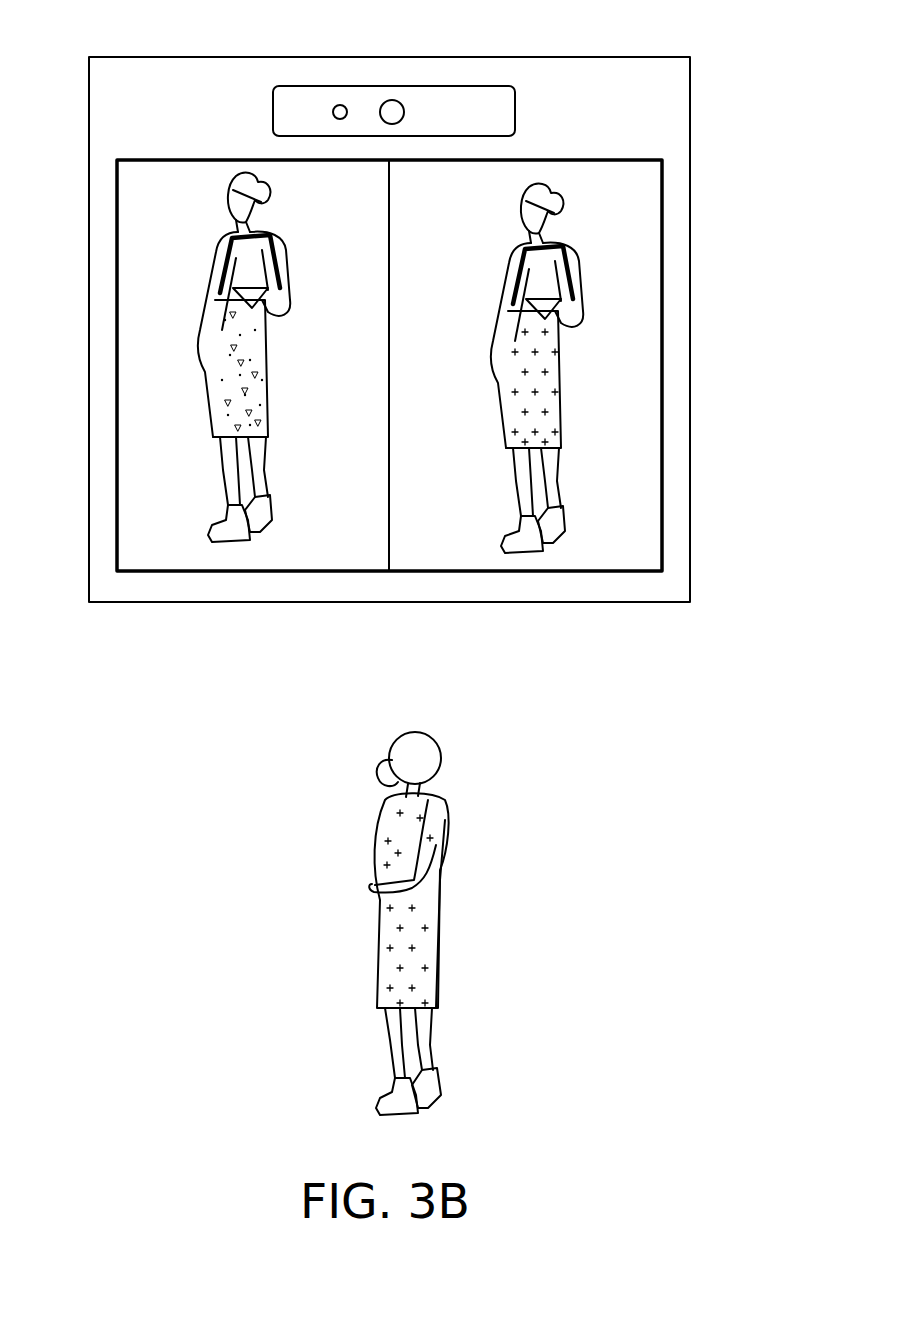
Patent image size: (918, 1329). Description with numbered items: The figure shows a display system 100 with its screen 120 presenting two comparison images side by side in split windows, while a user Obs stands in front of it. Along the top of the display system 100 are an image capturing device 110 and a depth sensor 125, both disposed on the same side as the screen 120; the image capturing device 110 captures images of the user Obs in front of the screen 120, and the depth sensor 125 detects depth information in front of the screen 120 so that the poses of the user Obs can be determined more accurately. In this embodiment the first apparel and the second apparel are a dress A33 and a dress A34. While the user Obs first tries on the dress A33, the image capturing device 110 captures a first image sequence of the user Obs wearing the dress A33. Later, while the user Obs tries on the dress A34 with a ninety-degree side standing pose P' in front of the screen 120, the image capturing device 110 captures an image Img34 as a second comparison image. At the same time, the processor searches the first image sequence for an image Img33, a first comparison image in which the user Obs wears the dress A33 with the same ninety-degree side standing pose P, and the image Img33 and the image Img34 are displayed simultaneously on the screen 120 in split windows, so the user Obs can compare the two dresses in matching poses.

The display system 100 is at (690, 387).
The image capturing device 110 is at (392, 100).
The depth sensor 125 is at (339, 104).
The screen 120 is at (662, 181).
The image Img33 is at (265, 572).
The image Img34 is at (536, 572).
The 90-degree side standing pose P is at (275, 255).
The 90-degree side standing pose P' is at (572, 267).
The dress A33 is at (263, 373).
The dress A34 is at (556, 384).
The user Obs is at (448, 814).